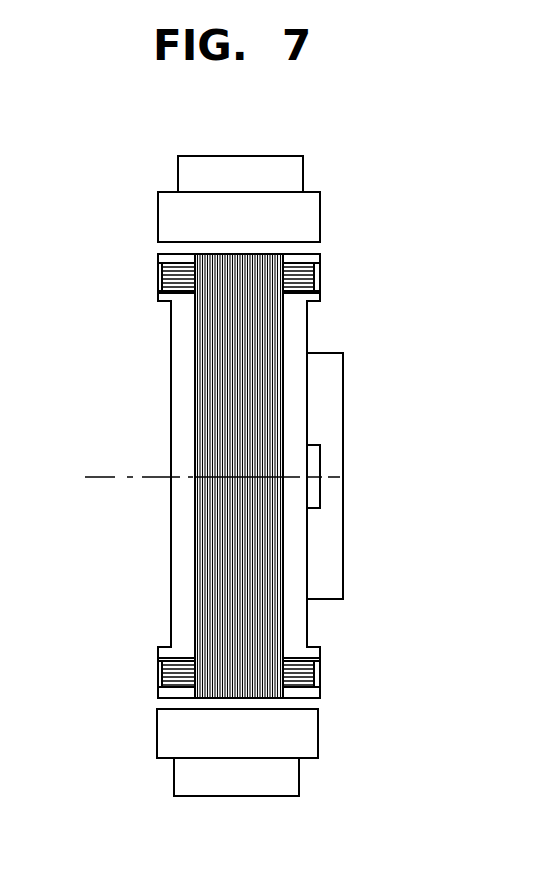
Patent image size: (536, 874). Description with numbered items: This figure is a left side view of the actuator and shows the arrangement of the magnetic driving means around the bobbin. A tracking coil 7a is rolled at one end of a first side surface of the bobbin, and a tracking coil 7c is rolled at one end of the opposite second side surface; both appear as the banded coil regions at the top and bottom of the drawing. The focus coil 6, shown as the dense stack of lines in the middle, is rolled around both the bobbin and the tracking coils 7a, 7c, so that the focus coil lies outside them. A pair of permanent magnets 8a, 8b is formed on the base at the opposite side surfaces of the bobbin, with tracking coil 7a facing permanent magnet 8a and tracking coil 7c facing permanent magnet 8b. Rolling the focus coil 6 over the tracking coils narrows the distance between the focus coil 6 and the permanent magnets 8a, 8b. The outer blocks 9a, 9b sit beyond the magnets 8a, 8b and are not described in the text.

The focus coil 6 is at (205, 338).
The tracking coil 7a is at (313, 275).
The tracking coil 7c is at (313, 676).
The permanent magnet 8a is at (308, 219).
The permanent magnet 8b is at (300, 736).
The upper magnet 9a is at (287, 171).
The lower magnet 9b is at (287, 778).